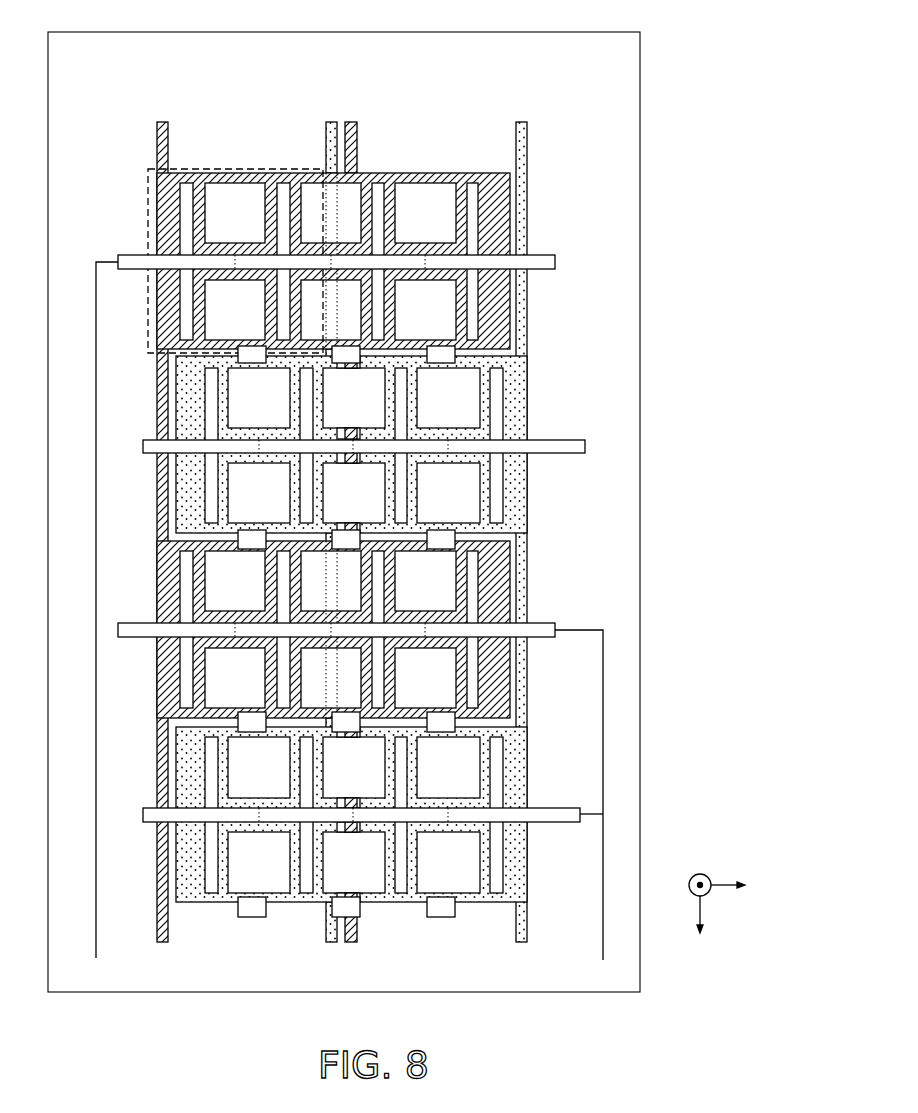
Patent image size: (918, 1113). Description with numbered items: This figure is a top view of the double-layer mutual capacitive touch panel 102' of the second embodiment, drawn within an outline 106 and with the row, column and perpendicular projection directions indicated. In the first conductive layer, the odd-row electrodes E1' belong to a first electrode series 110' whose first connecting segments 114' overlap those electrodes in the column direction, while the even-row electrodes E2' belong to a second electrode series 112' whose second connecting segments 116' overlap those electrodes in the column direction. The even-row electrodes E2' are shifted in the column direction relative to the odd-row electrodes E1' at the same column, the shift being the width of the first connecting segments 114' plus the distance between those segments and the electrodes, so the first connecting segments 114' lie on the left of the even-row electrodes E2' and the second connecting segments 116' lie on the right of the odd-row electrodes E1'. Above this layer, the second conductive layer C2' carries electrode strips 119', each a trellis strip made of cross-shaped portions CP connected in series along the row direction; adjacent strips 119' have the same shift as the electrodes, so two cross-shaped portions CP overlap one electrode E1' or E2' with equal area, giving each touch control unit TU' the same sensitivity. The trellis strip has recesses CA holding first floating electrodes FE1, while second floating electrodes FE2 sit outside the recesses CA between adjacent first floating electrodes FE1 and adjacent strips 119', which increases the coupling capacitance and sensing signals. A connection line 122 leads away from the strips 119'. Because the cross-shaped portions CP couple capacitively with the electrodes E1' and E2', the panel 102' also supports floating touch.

The double-layer mutual capacitive touch panel 102' is at (413, 496).
The substrate 106 is at (619, 512).
The first electrode series 110' is at (304, 492).
The second electrode series 112' is at (319, 489).
The first connecting segments 114' is at (275, 492).
The second connecting segments 116' is at (417, 489).
The electrode strip 119' is at (353, 580).
The connection line 122 is at (603, 662).
The odd-row electrode E1' is at (304, 492).
The even-row electrode E2' is at (319, 489).
The touch control unit TU' is at (209, 242).
The cross-shaped portion CP is at (285, 250).
The recess CA is at (460, 186).
The first floating electrode FE1 is at (330, 261).
The second floating electrode FE2 is at (240, 350).
The second conductive layer C2' is at (594, 126).